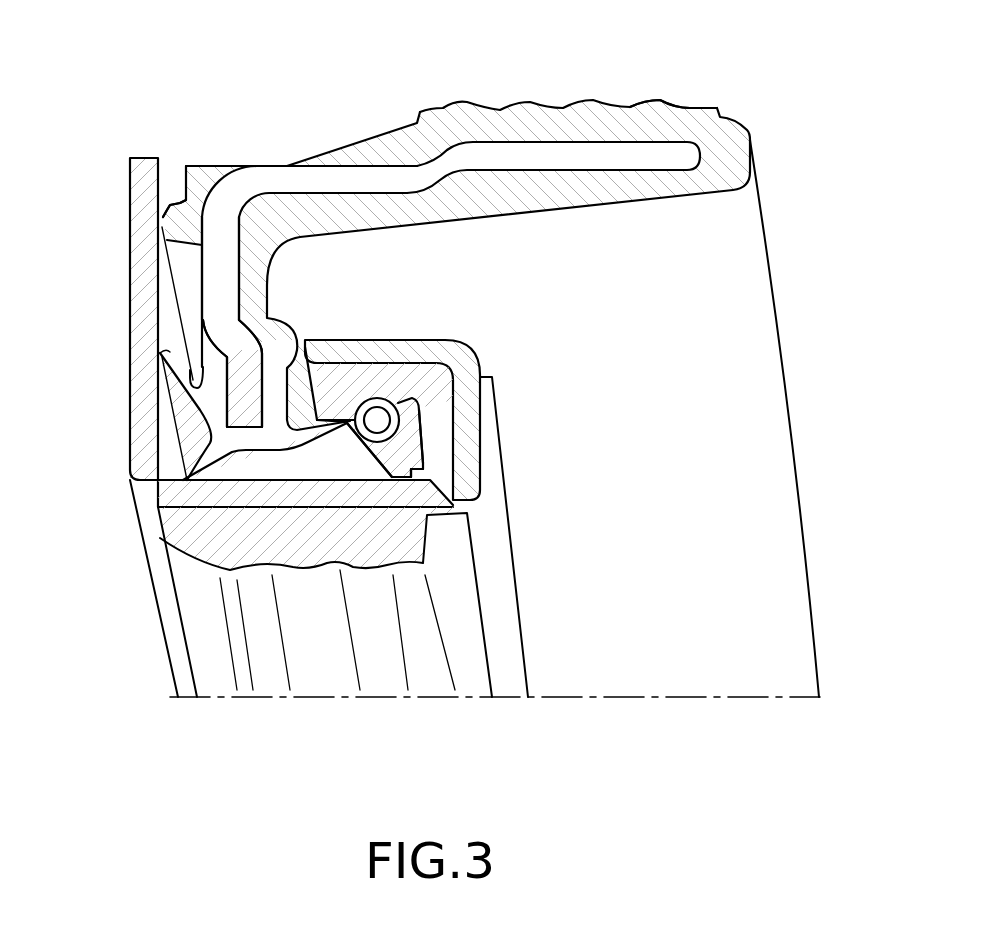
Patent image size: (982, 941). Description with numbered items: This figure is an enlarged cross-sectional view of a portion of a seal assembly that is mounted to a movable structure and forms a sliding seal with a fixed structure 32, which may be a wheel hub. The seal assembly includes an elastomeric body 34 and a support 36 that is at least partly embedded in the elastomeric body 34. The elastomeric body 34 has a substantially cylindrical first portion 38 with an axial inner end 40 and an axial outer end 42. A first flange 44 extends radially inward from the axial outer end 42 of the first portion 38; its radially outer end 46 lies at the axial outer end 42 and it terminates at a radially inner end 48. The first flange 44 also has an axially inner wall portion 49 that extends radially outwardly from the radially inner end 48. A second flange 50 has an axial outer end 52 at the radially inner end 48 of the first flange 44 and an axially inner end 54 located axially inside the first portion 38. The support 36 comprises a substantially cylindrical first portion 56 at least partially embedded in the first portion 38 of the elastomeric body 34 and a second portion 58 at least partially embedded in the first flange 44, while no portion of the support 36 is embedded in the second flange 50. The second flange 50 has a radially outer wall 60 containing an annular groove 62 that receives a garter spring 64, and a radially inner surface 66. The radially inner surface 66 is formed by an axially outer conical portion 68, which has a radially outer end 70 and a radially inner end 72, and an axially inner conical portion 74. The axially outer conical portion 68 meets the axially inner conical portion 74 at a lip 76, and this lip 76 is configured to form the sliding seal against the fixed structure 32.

The fixed structure 32 is at (130, 418).
The elastomeric body 34 is at (645, 90).
The support 36 is at (494, 150).
The first portion 38 is at (468, 110).
The axial inner end 40 is at (752, 137).
The axial outer end 42 is at (205, 166).
The first flange 44 is at (203, 353).
The radially outer end 46 is at (190, 216).
The radially inner end 48 is at (250, 440).
The axially inner wall portion 49 is at (235, 323).
The second flange 50 is at (308, 445).
The axial outer end 52 is at (265, 443).
The axially inner end 54 is at (410, 438).
The first portion 56 is at (360, 182).
The second portion 58 is at (220, 268).
The radially outer wall 60 is at (337, 420).
The annular groove 62 is at (398, 406).
The garter spring 64 is at (378, 397).
The radially inner surface 66 is at (302, 447).
The axially outer conical portion 68 is at (387, 480).
The radially outer end 70 is at (353, 482).
The radially inner end 72 is at (360, 478).
The axially inner conical portion 74 is at (395, 478).
The lip 76 is at (407, 480).